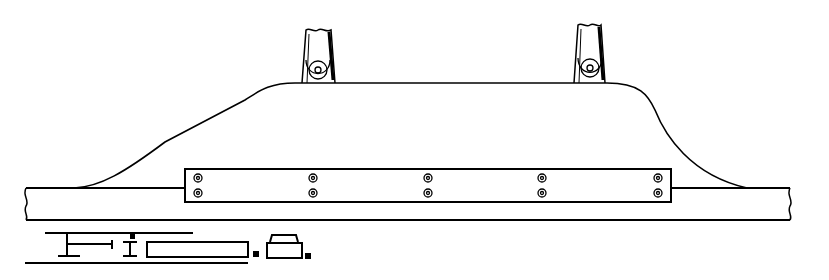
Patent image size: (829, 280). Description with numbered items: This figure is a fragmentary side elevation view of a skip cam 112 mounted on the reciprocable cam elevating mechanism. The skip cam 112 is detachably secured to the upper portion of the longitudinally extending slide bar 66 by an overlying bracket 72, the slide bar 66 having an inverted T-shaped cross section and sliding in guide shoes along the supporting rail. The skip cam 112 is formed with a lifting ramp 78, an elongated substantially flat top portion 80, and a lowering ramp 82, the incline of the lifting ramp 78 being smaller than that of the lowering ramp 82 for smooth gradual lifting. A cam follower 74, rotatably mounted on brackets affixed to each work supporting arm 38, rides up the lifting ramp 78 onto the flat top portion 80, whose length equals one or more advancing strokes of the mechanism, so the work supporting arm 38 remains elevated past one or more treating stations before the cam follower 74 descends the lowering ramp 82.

The work supporting arm 38 is at (322, 50).
The slide bar 66 is at (48, 195).
The overlying bracket 72 is at (482, 192).
The cam follower 74 is at (332, 75).
The lifting ramp 78 is at (190, 125).
The flat top portion 80 is at (478, 82).
The lowering ramp 82 is at (673, 137).
The skip cam 112 is at (408, 103).